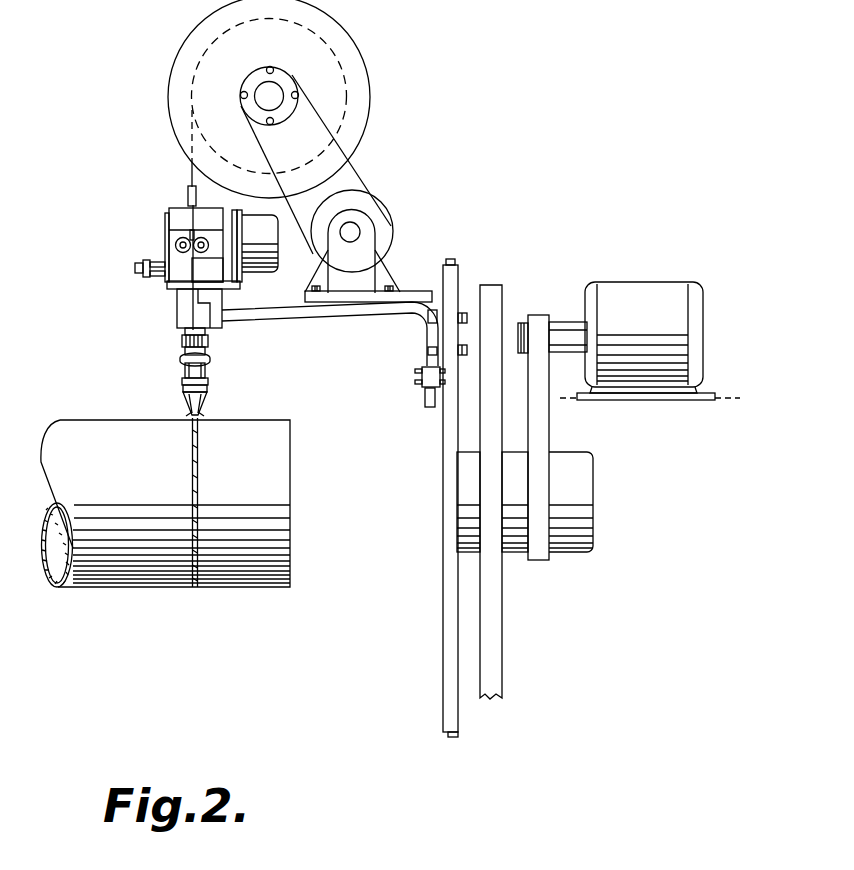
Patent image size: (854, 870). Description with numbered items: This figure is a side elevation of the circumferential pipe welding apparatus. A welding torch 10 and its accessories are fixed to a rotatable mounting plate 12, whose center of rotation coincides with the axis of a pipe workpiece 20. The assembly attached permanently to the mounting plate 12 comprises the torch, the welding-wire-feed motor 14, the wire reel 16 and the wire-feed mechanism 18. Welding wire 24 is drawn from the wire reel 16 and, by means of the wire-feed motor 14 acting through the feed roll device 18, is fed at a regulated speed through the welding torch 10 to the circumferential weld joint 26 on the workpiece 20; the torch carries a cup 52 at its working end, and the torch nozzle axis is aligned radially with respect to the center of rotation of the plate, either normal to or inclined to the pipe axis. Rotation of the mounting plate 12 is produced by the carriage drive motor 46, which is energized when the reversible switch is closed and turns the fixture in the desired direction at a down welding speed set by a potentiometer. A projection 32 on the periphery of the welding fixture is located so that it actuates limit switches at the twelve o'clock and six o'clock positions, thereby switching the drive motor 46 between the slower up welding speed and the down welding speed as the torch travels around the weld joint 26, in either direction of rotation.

The welding torch 10 is at (183, 352).
The rotatable mounting plate 12 is at (452, 655).
The welding-wire-feed motor 14 is at (265, 257).
The wire reel 16 is at (360, 78).
The wire-feed mechanism 18 is at (178, 265).
The pipe workpiece 20 is at (275, 490).
The welding wire 24 is at (192, 178).
The circumferential weld joint 26 is at (195, 590).
The projection 32 is at (449, 258).
The carriage drive motor 46 is at (643, 298).
The cup 52 is at (184, 398).